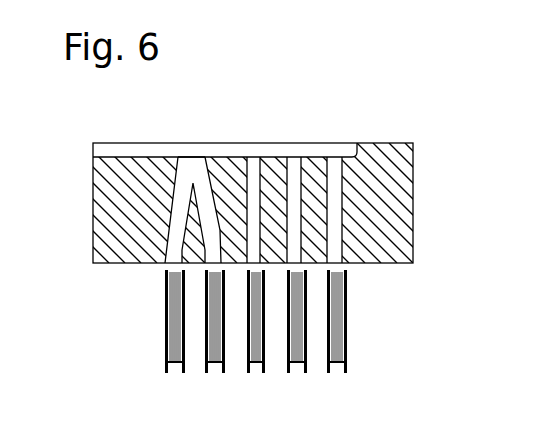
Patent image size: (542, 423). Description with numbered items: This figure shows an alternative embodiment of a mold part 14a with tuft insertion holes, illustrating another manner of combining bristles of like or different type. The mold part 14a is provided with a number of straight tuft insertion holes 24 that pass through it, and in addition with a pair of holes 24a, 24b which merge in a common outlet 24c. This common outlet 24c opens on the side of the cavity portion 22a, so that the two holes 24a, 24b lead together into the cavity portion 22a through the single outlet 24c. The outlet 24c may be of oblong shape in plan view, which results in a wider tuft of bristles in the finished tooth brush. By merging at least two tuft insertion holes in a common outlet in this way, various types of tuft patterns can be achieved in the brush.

The mold part 14a is at (113, 237).
The cavity portion 22a is at (270, 153).
The straight tuft insertion holes 24 is at (333, 245).
The hole 24a is at (167, 202).
The hole 24b is at (215, 237).
The common outlet 24c is at (124, 198).